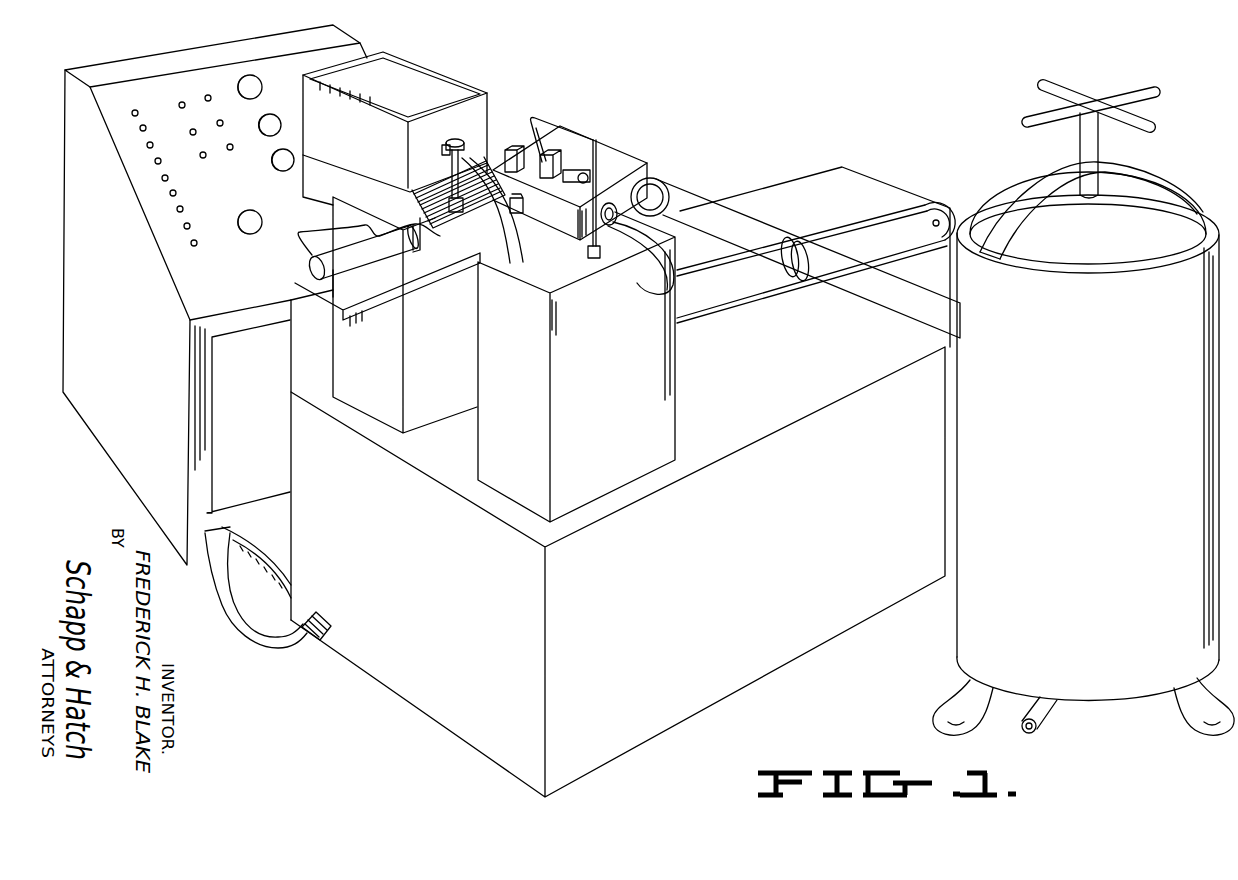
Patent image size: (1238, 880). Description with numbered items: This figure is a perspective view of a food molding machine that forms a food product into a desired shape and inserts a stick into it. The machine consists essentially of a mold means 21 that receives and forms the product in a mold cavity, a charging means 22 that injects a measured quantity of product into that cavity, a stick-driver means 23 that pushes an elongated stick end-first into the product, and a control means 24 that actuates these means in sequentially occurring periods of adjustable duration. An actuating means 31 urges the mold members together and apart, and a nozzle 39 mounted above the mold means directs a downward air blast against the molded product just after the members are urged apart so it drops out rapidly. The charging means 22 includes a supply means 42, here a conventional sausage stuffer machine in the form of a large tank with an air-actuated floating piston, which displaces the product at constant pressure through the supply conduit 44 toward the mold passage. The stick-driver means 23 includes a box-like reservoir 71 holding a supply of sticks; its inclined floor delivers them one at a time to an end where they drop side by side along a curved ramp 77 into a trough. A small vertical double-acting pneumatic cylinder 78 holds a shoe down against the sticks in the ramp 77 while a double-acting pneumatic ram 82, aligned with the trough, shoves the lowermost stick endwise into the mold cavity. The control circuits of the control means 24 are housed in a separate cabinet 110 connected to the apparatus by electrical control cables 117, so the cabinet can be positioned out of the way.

The mold means 21 is at (552, 147).
The charging means 22 is at (580, 152).
The stick-driver means 23 is at (500, 125).
The control means 24 is at (152, 62).
The actuating means 31 is at (612, 240).
The nozzle 39 is at (545, 114).
The supply means 42 is at (1095, 472).
The supply conduit 44 is at (867, 297).
The box-like reservoir 71 is at (364, 144).
The curved ramp 77 is at (425, 190).
The double-acting pneumatic cylinder 78 is at (438, 163).
The double-acting pneumatic ram 82 is at (347, 262).
The cabinet 110 is at (262, 412).
The electrical control cables 117 is at (262, 640).